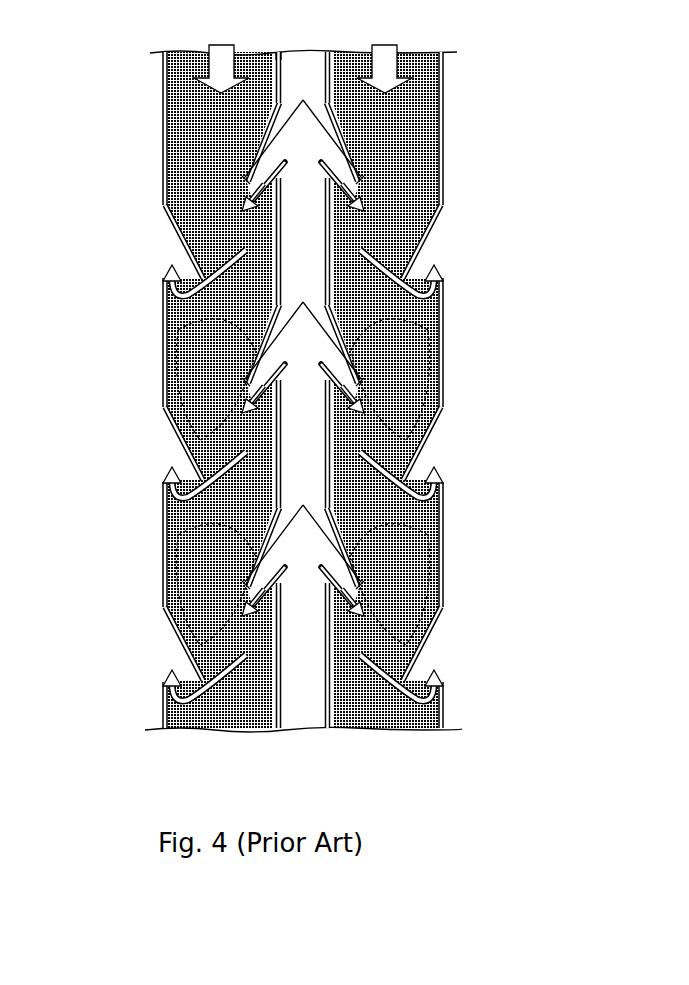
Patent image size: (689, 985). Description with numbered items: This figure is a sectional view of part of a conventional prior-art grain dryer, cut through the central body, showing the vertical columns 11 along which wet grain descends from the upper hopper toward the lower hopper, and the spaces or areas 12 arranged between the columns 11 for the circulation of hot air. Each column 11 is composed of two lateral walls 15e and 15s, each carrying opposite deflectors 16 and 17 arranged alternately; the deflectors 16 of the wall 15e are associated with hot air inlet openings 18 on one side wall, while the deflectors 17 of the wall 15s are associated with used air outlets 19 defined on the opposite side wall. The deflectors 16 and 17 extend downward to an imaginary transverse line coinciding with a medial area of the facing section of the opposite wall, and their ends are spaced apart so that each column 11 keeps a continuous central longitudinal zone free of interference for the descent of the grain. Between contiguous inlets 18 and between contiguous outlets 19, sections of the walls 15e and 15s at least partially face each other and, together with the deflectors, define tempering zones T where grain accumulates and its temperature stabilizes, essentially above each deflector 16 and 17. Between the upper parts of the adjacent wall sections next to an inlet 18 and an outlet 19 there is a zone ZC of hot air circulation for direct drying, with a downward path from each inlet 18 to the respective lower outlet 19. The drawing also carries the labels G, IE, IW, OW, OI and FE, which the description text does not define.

The vertical column 11 is at (228, 740).
The hot air circulation space 12 is at (314, 454).
The lateral wall 15s is at (158, 95).
The lateral wall 15e is at (303, 88).
The deflector 16 is at (304, 504).
The deflector 17 is at (228, 226).
The hot air inlet opening 18 is at (342, 160).
The used air outlet 19 is at (160, 255).
The gas flow G is at (303, 58).
The inner edge IE is at (258, 100).
The inner wall IW is at (322, 243).
The outer wall OW is at (447, 320).
The outer inlet OI is at (443, 205).
The tempering zone T is at (213, 135).
The hot air circulation zone ZC is at (205, 200).
The flow edge FE is at (372, 414).